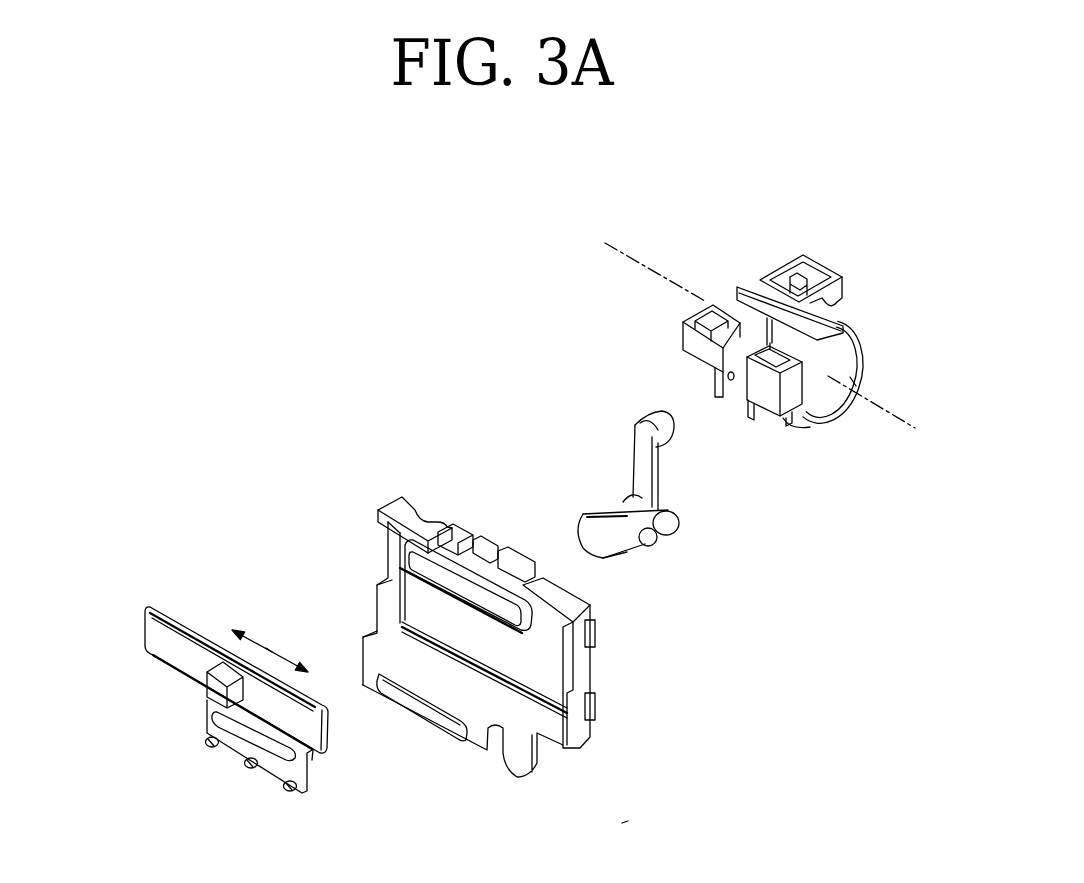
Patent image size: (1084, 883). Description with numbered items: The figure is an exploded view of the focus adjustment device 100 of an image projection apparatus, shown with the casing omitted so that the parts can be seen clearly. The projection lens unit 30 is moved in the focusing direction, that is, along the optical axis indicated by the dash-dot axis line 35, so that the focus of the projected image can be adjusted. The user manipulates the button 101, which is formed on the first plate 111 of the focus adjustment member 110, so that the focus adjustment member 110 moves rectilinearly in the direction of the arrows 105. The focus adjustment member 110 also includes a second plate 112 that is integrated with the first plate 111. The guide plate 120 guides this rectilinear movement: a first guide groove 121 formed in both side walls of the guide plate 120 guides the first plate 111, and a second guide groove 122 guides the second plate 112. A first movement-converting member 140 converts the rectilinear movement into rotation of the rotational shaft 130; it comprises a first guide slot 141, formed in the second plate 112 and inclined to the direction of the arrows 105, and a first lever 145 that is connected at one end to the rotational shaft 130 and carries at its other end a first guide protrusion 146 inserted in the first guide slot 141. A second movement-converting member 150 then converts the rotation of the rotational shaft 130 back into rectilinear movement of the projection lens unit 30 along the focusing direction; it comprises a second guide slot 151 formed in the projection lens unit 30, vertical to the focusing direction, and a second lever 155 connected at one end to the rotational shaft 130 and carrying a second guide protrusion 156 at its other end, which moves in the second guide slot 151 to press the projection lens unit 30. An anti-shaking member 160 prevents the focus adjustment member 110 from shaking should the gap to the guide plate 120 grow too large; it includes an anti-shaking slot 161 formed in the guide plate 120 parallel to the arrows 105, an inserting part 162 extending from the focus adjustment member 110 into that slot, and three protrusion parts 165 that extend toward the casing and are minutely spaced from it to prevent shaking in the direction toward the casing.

The focus adjustment device 100 is at (309, 256).
The projection lens unit 30 is at (851, 252).
The rotation axis 35 is at (878, 404).
The second guide protrusion 156 is at (657, 422).
The rotational shaft 130 is at (623, 500).
The second lever 155 is at (660, 470).
The second guide slot 151 is at (737, 408).
The second movement-converting member 150 is at (745, 493).
The first guide protrusion 146 is at (667, 533).
The first lever 145 is at (625, 547).
The first movement-converting member 140 is at (437, 847).
The first guide slot 141 is at (312, 748).
The guide plate 120 is at (416, 488).
The first guide groove 121 is at (410, 552).
The second guide groove 122 is at (403, 597).
The anti-shaking member 160 is at (312, 510).
The anti-shaking slot 161 is at (388, 525).
The inserting part 162 is at (242, 650).
The protrusion parts 165 is at (203, 747).
The arrows 105 is at (269, 634).
The button 101 is at (235, 692).
The first plate 111 is at (145, 637).
The second plate 112 is at (222, 757).
The focus adjustment member 110 is at (256, 790).